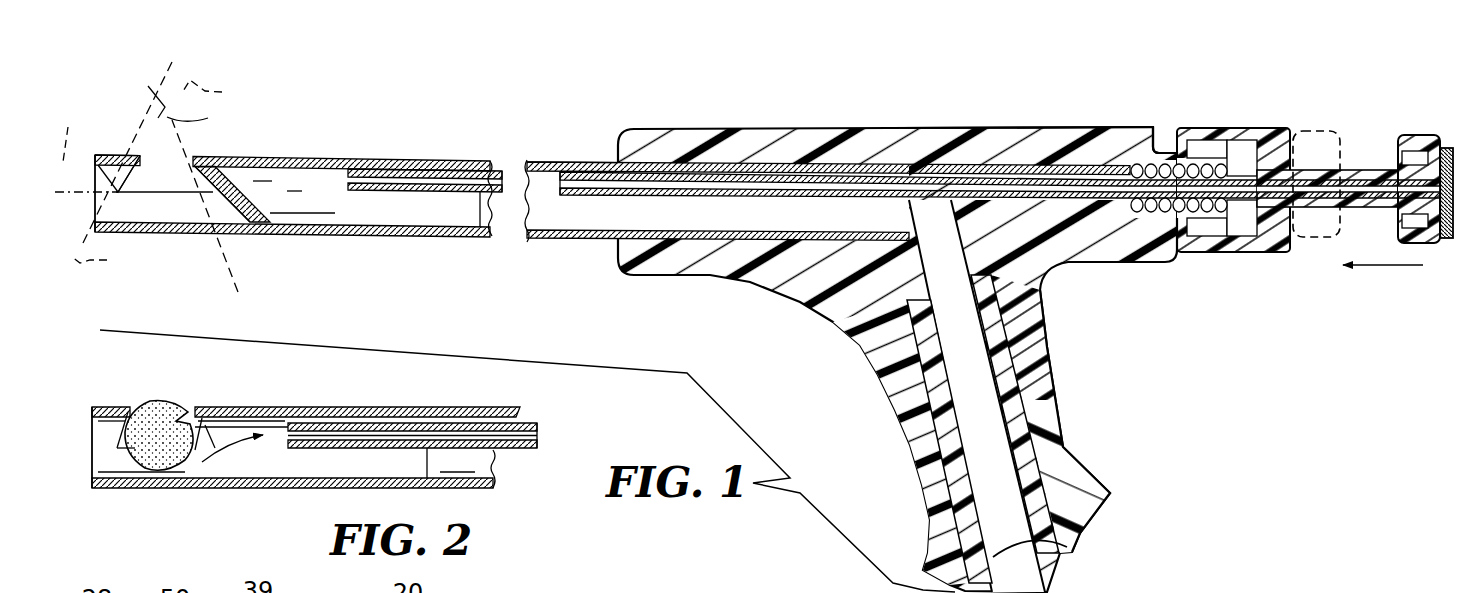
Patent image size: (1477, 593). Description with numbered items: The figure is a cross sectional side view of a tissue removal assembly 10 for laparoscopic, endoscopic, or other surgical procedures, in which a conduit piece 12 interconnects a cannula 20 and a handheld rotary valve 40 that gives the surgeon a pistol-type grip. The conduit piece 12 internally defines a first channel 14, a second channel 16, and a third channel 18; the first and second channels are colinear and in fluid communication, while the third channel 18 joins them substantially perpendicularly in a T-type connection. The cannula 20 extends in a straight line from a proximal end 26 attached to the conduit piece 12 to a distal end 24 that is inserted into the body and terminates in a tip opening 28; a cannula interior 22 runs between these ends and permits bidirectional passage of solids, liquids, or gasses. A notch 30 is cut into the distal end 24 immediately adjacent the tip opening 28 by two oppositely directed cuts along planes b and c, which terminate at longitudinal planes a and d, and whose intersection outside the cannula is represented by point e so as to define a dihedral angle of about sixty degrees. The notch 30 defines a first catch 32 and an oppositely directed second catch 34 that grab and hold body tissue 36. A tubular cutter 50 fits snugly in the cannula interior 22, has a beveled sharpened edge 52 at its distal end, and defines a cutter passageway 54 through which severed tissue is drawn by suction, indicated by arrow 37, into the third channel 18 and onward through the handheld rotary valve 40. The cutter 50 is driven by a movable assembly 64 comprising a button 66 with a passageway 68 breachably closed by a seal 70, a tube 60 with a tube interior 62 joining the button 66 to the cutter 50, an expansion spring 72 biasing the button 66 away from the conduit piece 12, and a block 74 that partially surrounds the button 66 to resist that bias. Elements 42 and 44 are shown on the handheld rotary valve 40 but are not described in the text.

In FIG. 1, the tissue removal assembly 10 is at (868, 120).
In FIG. 1, the conduit piece 12 is at (1014, 124).
In FIG. 1, the first channel 14 is at (712, 232).
In FIG. 1, the second channel 16 is at (1112, 184).
In FIG. 1, the third channel 18 is at (952, 283).
In FIG. 1, the cannula 20 is at (421, 157).
In FIG. 2, the cannula 20 is at (293, 403).
In FIG. 1, the cannula interior 22 is at (556, 212).
In FIG. 1, the distal end 24 is at (117, 140).
In FIG. 1, the proximal end 26 is at (614, 158).
In FIG. 1, the tip opening 28 is at (82, 176).
In FIG. 2, the tip opening 28 is at (89, 438).
In FIG. 1, the notch 30 is at (177, 163).
In FIG. 1, the first catch 32 is at (146, 174).
In FIG. 1, the second catch 34 is at (200, 178).
In FIG. 2, the body tissue 36 is at (150, 402).
In FIG. 2, the arrow 37 is at (272, 457).
In FIG. 1, the handheld rotary valve 40 is at (1114, 488).
In FIG. 1, the grip plate 42 is at (1018, 502).
In FIG. 1, the grip bottom 44 is at (1072, 548).
In FIG. 1, the cutter 50 is at (128, 242).
In FIG. 2, the cutter 50 is at (205, 422).
In FIG. 1, the sharpened edge 52 is at (262, 200).
In FIG. 2, the sharpened edge 52 is at (195, 450).
In FIG. 1, the cutter passageway 54 is at (233, 228).
In FIG. 1, the tube 60 is at (421, 198).
In FIG. 2, the tube 60 is at (447, 423).
In FIG. 1, the tube interior 62 is at (513, 182).
In FIG. 2, the tube interior 62 is at (520, 438).
In FIG. 1, the movable assembly 64 is at (1321, 126).
In FIG. 1, the button 66 is at (1413, 147).
In FIG. 1, the passageway 68 is at (1337, 196).
In FIG. 1, the seal 70 is at (1448, 146).
In FIG. 1, the expansion spring 72 is at (1142, 142).
In FIG. 1, the block 74 is at (1241, 126).
In FIG. 1, the line a is at (86, 213).
In FIG. 1, the line b is at (161, 177).
In FIG. 1, the line c is at (156, 172).
In FIG. 1, the line d is at (66, 133).
In FIG. 1, the point e is at (195, 114).